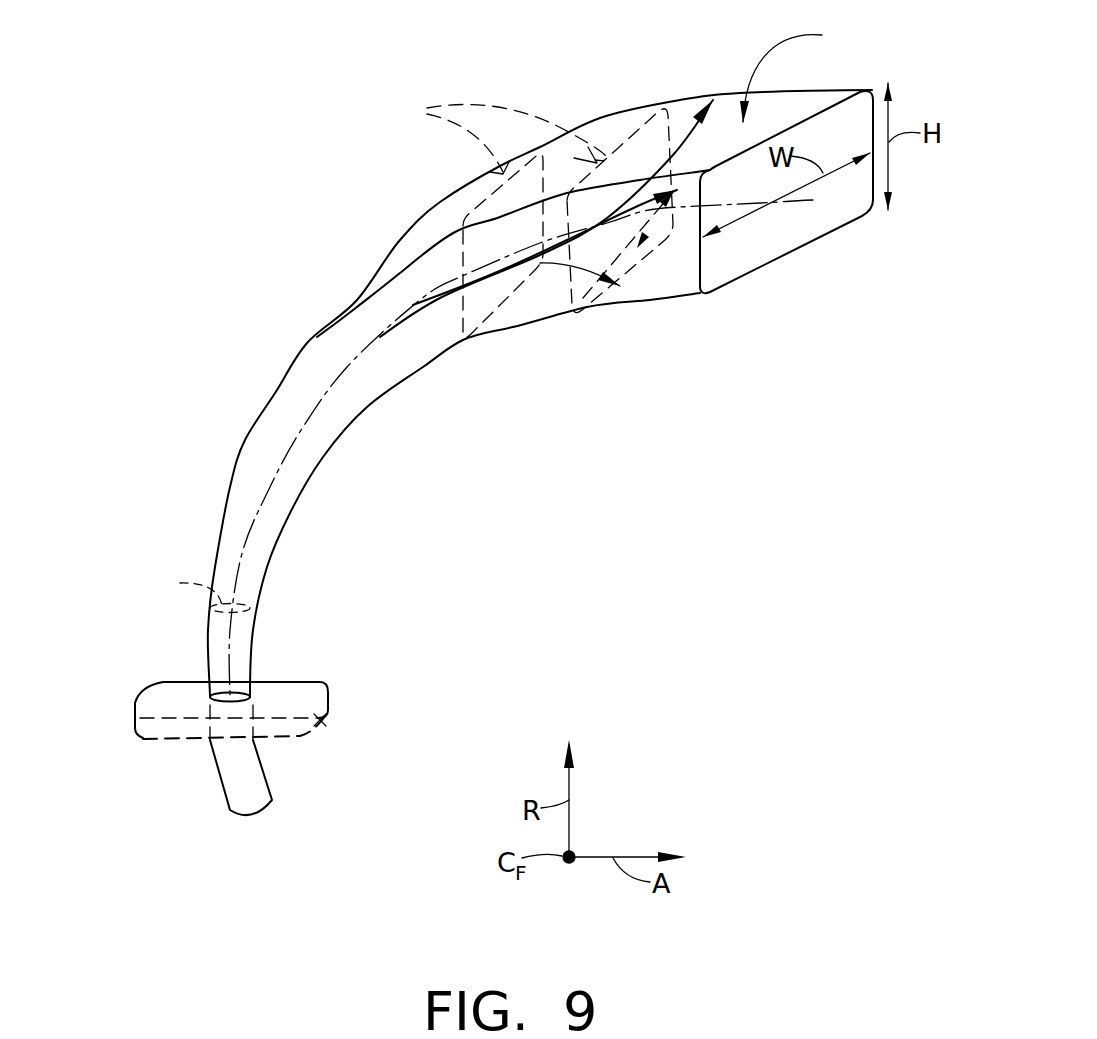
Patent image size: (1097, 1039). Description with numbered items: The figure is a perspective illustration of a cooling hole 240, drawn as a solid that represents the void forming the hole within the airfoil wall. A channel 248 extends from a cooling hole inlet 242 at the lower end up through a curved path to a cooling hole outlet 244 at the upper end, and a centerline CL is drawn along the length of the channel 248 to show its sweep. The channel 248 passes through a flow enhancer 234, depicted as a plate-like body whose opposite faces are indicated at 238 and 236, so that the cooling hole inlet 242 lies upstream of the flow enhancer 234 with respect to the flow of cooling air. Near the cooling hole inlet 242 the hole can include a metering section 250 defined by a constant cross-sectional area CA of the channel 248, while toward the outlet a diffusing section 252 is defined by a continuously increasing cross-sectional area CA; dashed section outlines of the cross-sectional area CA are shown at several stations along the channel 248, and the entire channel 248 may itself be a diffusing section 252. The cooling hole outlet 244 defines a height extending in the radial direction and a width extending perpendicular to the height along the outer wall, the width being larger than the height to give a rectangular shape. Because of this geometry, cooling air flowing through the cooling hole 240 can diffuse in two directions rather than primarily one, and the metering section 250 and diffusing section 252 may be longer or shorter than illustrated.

The cooling hole 240 is at (276, 101).
The cooling hole outlet 244 is at (780, 247).
The metering section 250 is at (807, 72).
The channel 248 is at (357, 310).
The diffusing section 252 is at (208, 655).
The flow enhancer 234 is at (330, 721).
The flange top surface 238 is at (293, 692).
The flange bottom surface 236 is at (178, 742).
The cooling hole inlet 242 is at (267, 813).
The centerline CL is at (370, 410).
The cross-sectional area CA is at (403, 355).